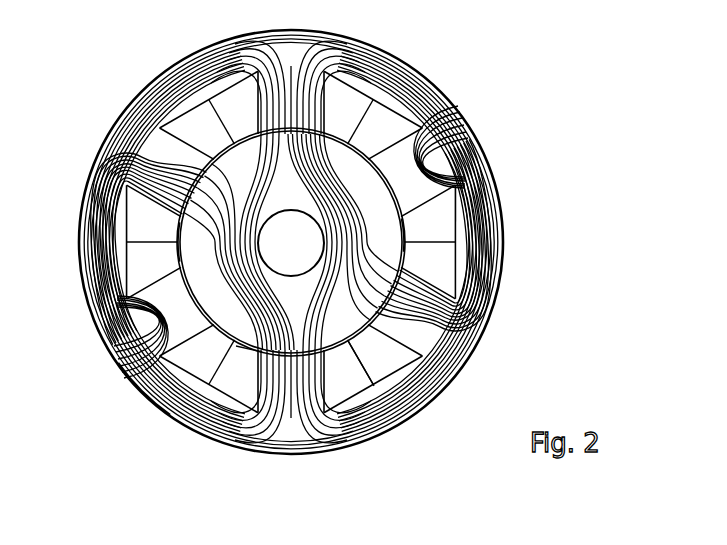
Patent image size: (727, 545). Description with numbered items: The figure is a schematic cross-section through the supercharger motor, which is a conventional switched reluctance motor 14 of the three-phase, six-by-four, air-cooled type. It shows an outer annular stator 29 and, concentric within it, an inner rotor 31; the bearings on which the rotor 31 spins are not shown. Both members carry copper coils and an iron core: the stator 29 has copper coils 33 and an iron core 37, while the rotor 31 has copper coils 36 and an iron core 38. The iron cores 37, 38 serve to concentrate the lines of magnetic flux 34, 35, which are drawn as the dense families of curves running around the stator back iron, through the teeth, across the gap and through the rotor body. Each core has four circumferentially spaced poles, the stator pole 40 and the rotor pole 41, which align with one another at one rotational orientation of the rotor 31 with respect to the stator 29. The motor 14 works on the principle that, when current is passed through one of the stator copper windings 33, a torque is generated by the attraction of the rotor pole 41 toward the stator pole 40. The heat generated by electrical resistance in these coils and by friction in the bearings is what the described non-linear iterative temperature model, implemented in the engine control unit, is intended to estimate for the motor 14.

The switched reluctance motor 14 is at (121, 414).
The stator 29 is at (462, 103).
The rotor 31 is at (404, 231).
The stator copper coils 33 is at (347, 112).
The stator lines of magnetic flux 34 is at (472, 344).
The rotor lines of magnetic flux 35 is at (399, 255).
The rotor copper coils 36 is at (253, 180).
The stator iron core 37 is at (315, 444).
The rotor iron core 38 is at (192, 237).
The stator pole 40 is at (315, 357).
The rotor pole 41 is at (245, 348).